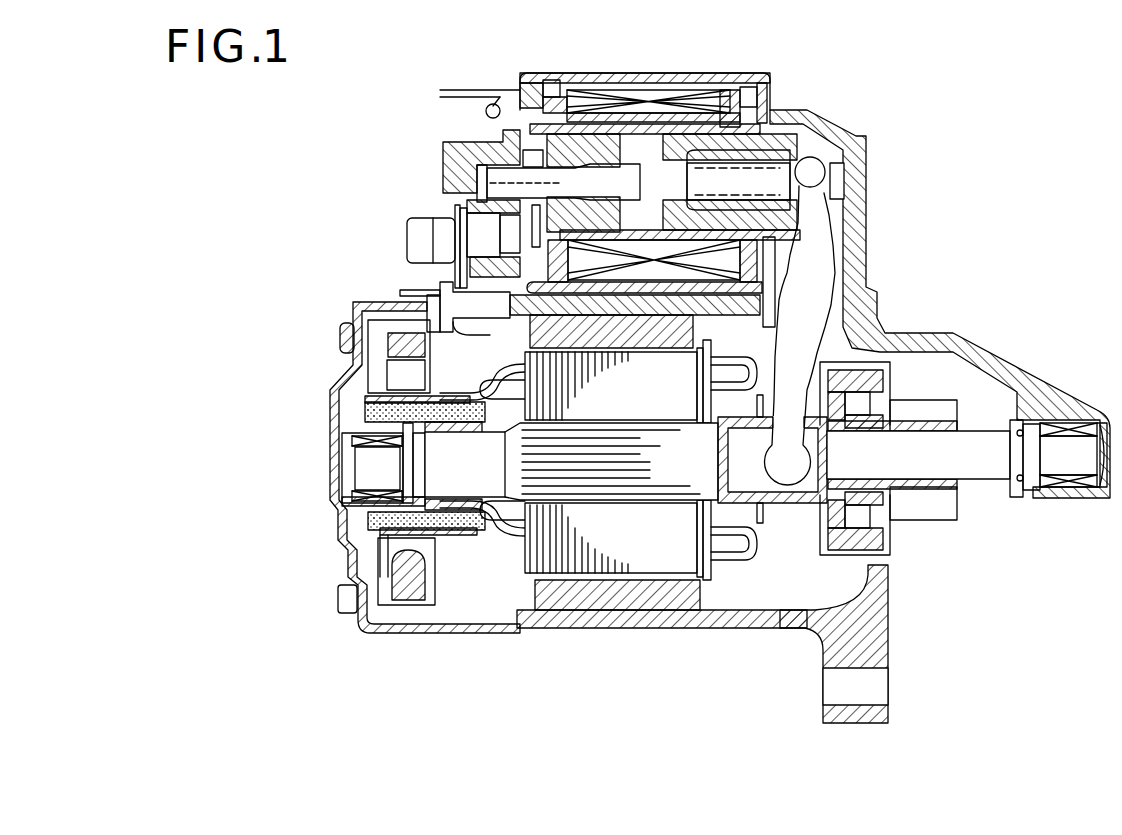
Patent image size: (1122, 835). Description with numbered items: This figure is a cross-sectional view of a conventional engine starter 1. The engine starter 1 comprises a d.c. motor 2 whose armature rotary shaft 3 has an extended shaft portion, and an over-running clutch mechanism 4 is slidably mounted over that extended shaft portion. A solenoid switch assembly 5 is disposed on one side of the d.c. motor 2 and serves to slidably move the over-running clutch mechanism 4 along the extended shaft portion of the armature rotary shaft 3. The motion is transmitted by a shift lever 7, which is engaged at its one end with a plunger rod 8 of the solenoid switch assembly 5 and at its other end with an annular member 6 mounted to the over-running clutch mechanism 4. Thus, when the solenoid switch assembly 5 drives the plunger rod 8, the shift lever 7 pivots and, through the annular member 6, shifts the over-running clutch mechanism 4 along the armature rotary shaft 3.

The engine starter 1 is at (893, 153).
The d.c. motor 2 is at (673, 547).
The armature rotary shaft 3 is at (982, 460).
The over-running clutch mechanism 4 is at (857, 375).
The solenoid switch assembly 5 is at (690, 99).
The annular member 6 is at (804, 503).
The shift lever 7 is at (822, 272).
The plunger rod 8 is at (838, 162).